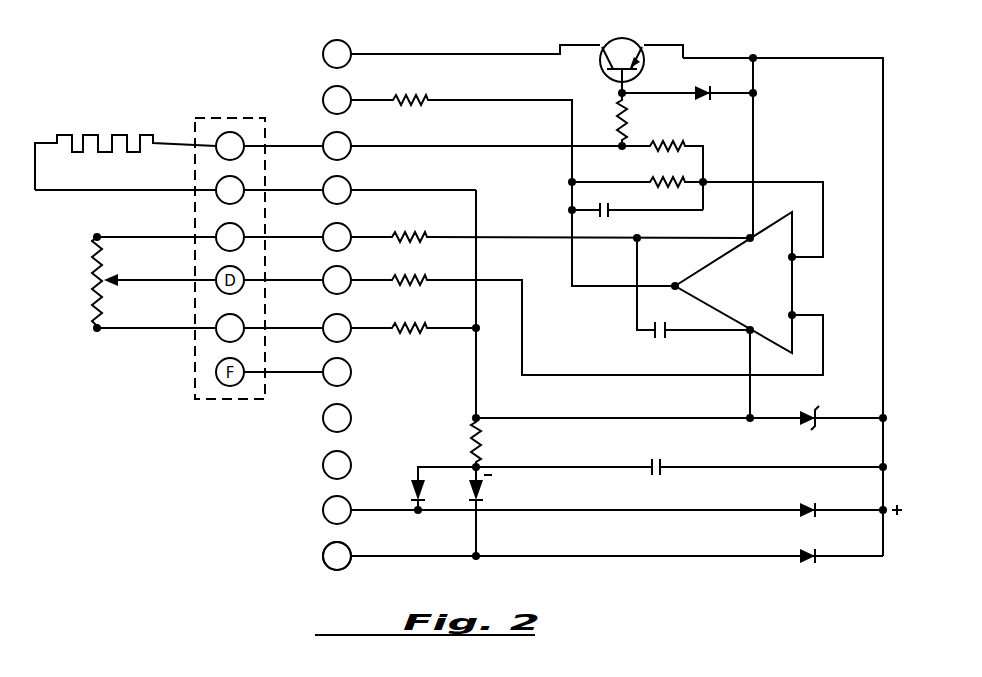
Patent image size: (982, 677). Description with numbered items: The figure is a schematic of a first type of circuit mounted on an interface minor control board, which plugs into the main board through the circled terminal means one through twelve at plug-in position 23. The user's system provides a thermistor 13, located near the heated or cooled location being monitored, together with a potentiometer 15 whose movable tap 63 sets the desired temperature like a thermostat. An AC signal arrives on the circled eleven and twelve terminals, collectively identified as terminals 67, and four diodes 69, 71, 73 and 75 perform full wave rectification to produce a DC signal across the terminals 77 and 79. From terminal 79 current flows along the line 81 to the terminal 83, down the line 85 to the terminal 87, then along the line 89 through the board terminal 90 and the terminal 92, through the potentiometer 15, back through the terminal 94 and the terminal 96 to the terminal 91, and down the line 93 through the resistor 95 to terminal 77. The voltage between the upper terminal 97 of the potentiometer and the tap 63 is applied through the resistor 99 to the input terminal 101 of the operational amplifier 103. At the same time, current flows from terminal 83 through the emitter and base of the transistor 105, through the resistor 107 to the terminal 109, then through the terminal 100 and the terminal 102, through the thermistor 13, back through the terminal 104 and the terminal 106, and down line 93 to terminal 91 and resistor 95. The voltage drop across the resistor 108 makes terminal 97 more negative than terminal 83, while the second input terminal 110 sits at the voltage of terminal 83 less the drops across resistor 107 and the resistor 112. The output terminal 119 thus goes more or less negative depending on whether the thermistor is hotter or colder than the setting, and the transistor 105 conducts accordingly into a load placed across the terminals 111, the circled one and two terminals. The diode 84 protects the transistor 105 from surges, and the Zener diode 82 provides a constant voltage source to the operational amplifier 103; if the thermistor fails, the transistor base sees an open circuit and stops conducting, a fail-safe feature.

The thermistor 13 is at (129, 140).
The potentiometer 15 is at (121, 311).
The plug-in position 23 is at (335, 572).
The movable tap 63 is at (160, 297).
The terminals 67 is at (322, 516).
The diode 69 is at (412, 490).
The diode 71 is at (487, 488).
The diode 73 is at (800, 509).
The diode 75 is at (810, 560).
The terminal 77 is at (482, 466).
The terminal 79 is at (883, 509).
The line 81 is at (883, 208).
The Zener diode 82 is at (805, 425).
The terminal 83 is at (758, 58).
The diode 84 is at (703, 88).
The line 85 is at (756, 70).
The terminal 87 is at (752, 236).
The line 89 is at (508, 237).
The board terminal 90 is at (350, 228).
The terminal 91 is at (481, 328).
The terminal 92 is at (245, 229).
The line 93 is at (463, 188).
The terminal 94 is at (245, 337).
The resistor 95 is at (470, 430).
The terminal 96 is at (323, 320).
The terminal 97 is at (95, 236).
The resistor 99 is at (410, 278).
The terminal 100 is at (352, 143).
The input terminal 101 is at (800, 315).
The terminal 102 is at (245, 138).
The operational amplifier 103 is at (756, 304).
The terminal 104 is at (245, 183).
The transistor 105 is at (628, 48).
The terminal 106 is at (352, 183).
The resistor 107 is at (615, 110).
The resistor 108 is at (414, 233).
The terminal 109 is at (622, 150).
The input terminal 110 is at (795, 258).
The terminals 111 is at (323, 94).
The resistor 112 is at (655, 146).
The output terminal 119 is at (675, 284).